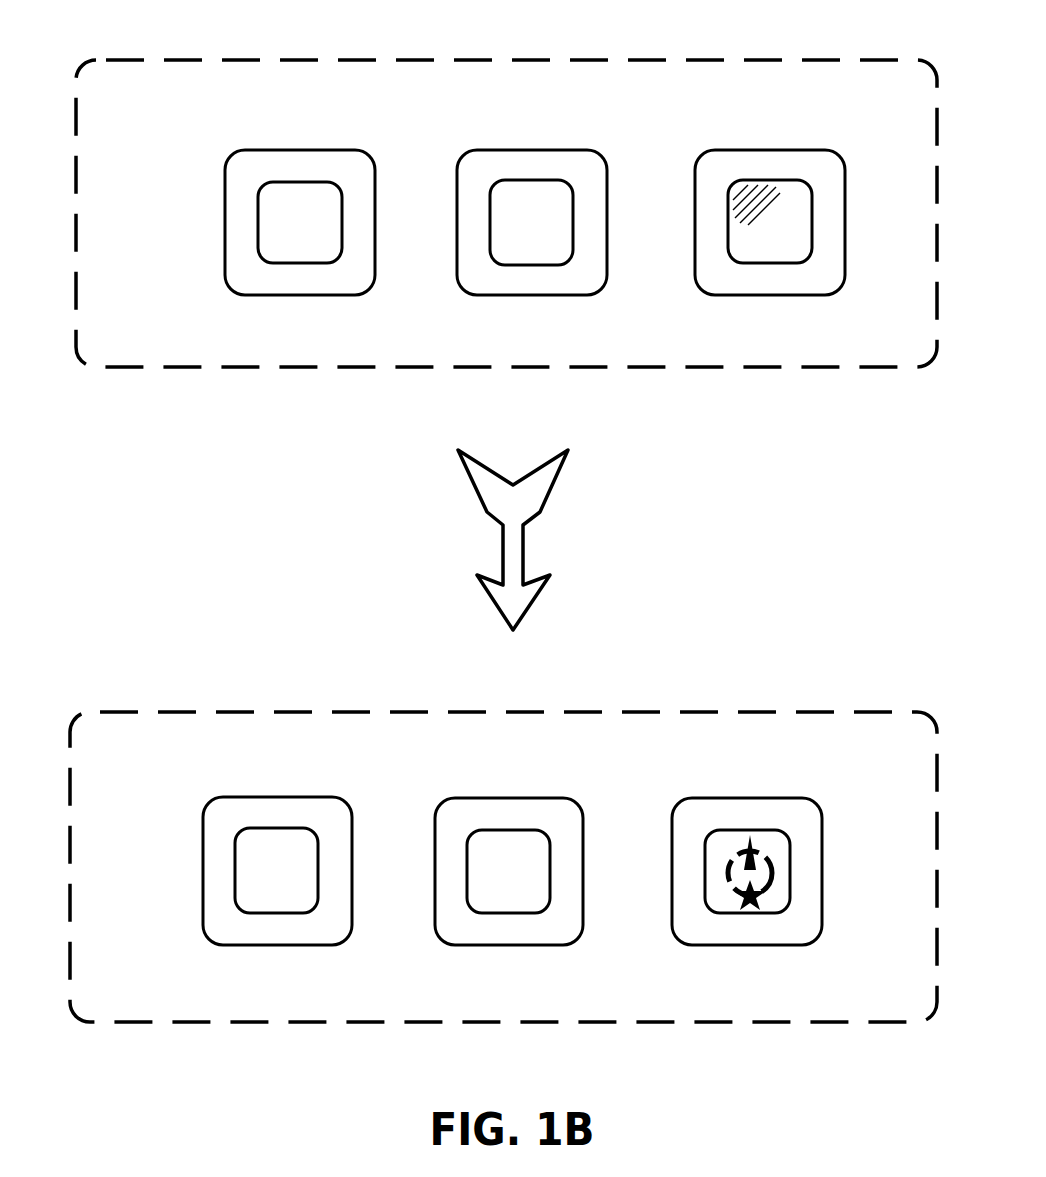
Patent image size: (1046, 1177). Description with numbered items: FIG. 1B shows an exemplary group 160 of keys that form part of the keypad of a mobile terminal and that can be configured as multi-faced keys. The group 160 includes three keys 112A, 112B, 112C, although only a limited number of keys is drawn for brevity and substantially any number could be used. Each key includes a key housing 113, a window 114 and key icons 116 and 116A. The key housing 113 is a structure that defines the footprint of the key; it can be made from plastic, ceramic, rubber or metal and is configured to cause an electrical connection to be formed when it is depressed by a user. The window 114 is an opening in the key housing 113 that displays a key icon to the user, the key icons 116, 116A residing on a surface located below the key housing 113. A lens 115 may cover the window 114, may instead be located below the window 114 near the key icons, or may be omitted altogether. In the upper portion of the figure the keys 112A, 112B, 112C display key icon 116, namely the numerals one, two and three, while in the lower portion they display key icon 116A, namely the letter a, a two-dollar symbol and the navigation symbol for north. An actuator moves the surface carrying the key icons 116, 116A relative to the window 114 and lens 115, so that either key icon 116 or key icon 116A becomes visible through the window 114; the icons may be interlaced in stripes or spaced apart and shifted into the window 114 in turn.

The group 160 is at (503, 517).
The key 112A is at (266, 540).
The key 112B is at (521, 524).
The key 112C is at (779, 524).
The key housing 113 is at (316, 196).
The window 114 is at (249, 189).
The lens 115 is at (809, 166).
The key icon 116 is at (234, 273).
The key icon 116A is at (204, 920).